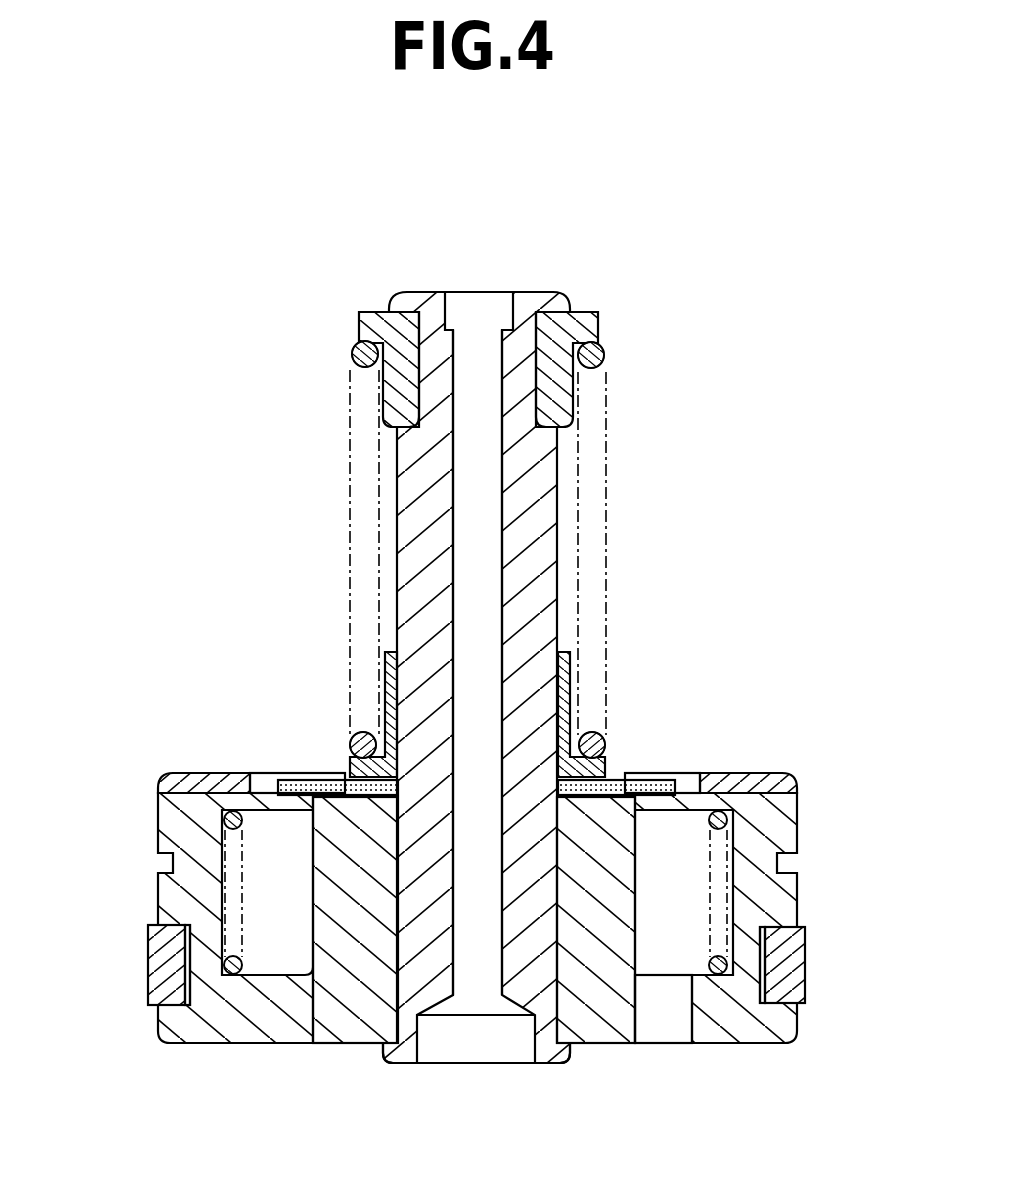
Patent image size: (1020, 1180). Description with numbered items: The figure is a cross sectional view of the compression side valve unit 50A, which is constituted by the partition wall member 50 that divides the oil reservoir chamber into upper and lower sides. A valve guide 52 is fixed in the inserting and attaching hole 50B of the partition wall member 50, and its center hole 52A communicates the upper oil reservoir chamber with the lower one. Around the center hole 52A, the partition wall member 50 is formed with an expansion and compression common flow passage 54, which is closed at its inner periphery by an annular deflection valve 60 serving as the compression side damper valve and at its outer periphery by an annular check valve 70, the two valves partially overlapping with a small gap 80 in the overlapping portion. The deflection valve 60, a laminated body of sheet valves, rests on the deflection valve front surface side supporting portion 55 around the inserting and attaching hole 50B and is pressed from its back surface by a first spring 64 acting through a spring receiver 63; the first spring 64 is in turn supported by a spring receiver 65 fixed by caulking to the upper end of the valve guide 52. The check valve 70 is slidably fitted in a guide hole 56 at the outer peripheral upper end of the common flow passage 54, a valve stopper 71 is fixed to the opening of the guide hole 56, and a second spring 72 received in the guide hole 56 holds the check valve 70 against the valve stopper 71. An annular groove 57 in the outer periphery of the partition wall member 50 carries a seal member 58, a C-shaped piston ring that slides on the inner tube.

The compression side valve unit 50A is at (272, 332).
The spring receiver 65 is at (578, 327).
The center hole 52A is at (488, 488).
The valve guide 52 is at (530, 563).
The first spring 64 is at (603, 748).
The spring receiver 63 is at (607, 770).
The deflection valve front surface side supporting portion 55 is at (600, 852).
The deflection valve 60 is at (305, 775).
The valve stopper 71 is at (790, 783).
The partition wall member 50 is at (178, 895).
The guide hole 56 is at (733, 868).
The annular groove 57 is at (160, 950).
The second spring 72 is at (735, 970).
The seal member 58 is at (160, 980).
The check valve 70 is at (258, 803).
The small gap 80 is at (318, 800).
The inserting and attaching hole 50B is at (555, 931).
The expansion and compression common flow passage 54 is at (690, 1013).